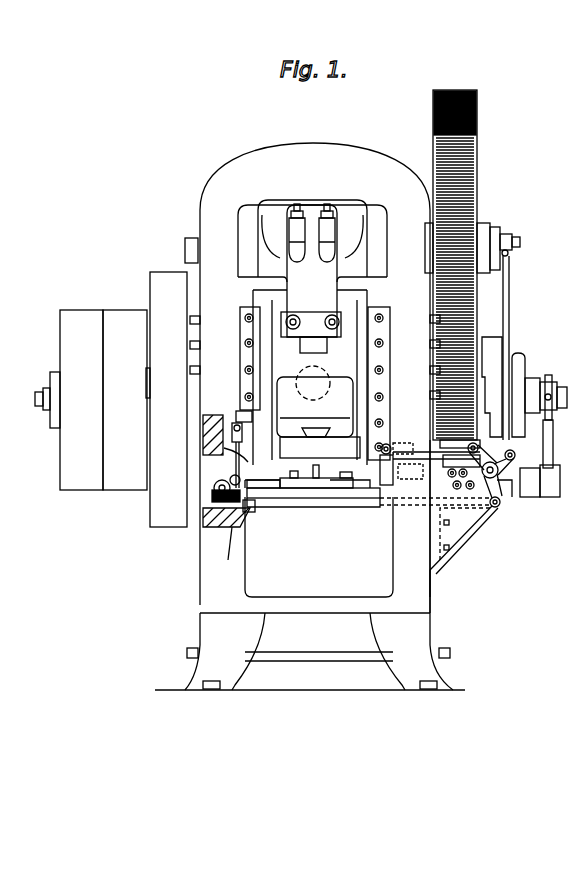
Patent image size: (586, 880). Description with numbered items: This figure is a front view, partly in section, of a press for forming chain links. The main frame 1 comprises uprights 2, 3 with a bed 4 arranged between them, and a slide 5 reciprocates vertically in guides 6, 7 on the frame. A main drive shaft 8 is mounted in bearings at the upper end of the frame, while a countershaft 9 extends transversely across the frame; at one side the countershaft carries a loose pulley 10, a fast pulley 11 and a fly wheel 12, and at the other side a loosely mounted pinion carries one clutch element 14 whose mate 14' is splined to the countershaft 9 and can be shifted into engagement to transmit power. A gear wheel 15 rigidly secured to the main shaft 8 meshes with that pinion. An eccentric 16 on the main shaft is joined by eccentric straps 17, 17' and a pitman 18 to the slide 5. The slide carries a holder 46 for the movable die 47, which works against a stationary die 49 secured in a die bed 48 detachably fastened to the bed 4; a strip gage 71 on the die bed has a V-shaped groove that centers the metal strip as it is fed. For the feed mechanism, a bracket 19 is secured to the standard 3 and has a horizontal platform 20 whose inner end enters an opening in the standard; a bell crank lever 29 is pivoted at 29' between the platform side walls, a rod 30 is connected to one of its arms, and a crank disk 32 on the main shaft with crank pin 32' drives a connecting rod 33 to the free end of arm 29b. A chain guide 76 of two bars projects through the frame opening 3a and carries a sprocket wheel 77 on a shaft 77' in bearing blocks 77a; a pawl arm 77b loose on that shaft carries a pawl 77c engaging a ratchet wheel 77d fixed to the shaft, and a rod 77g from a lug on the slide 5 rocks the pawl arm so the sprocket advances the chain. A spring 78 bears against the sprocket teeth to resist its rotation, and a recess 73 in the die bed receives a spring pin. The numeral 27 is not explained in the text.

The main frame 1 is at (313, 379).
The upright 2 is at (287, 468).
The upright 3 is at (428, 587).
The opening 3a is at (216, 415).
The bed 4 is at (331, 608).
The slide 5 is at (355, 393).
The guide 6 is at (243, 352).
The guide 7 is at (384, 358).
The main drive shaft 8 is at (186, 242).
The countershaft 9 is at (563, 395).
The loose pulley 10 is at (80, 315).
The fast pulley 11 is at (122, 312).
The fly wheel 12 is at (162, 272).
The clutch element 14 is at (492, 372).
The clutch element 14' is at (532, 384).
The gear wheel 15 is at (478, 170).
The eccentric 16 is at (338, 222).
The eccentric strap 17 is at (313, 218).
The eccentric strap 17' is at (323, 271).
The pitman 18 is at (327, 350).
The bracket 19 is at (468, 530).
The platform 20 is at (477, 517).
The pivot 27 is at (380, 462).
The bell crank lever 29 is at (511, 476).
The arm of bell crank lever 29b is at (516, 455).
The pivot connection 29' is at (522, 501).
The rod 30 is at (451, 484).
The crank disk 32 is at (497, 239).
The crank pin 32' is at (524, 242).
The connecting rod 33 is at (511, 300).
The die holder 46 is at (336, 437).
The movable die 47 is at (308, 437).
The die bed 48 is at (320, 503).
The stationary die 49 is at (331, 469).
The strip gage 71 is at (356, 498).
The recess 73 is at (473, 448).
The chain guide 76 is at (214, 482).
The sprocket wheel 77 is at (206, 510).
The shaft 77' is at (198, 490).
The bearing block 77a is at (233, 424).
The pawl carrying arm 77b is at (245, 480).
The pawl 77c is at (182, 471).
The ratchet wheel 77d is at (256, 510).
The rod 77g is at (233, 462).
The spring 78 is at (215, 530).